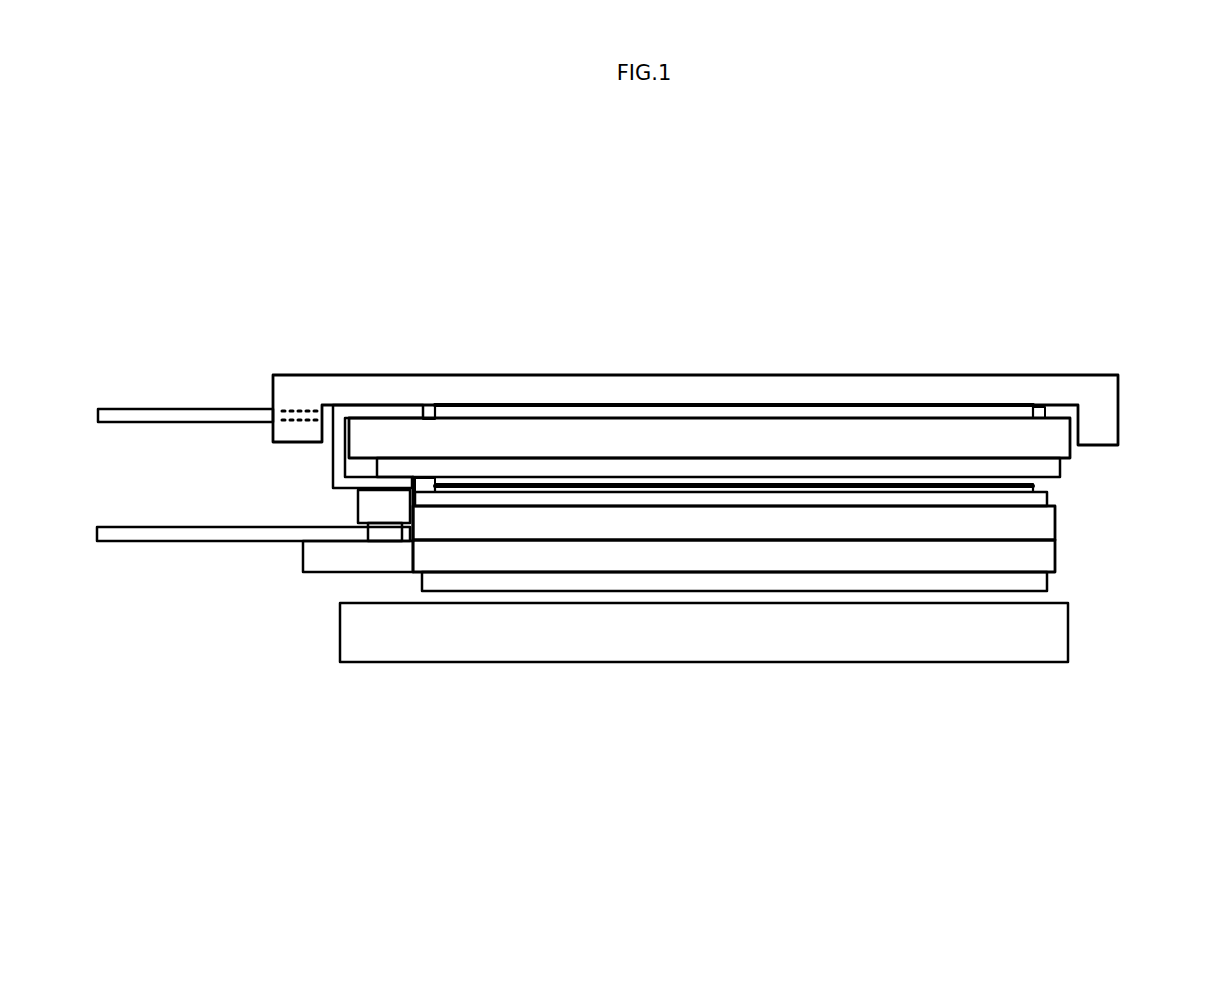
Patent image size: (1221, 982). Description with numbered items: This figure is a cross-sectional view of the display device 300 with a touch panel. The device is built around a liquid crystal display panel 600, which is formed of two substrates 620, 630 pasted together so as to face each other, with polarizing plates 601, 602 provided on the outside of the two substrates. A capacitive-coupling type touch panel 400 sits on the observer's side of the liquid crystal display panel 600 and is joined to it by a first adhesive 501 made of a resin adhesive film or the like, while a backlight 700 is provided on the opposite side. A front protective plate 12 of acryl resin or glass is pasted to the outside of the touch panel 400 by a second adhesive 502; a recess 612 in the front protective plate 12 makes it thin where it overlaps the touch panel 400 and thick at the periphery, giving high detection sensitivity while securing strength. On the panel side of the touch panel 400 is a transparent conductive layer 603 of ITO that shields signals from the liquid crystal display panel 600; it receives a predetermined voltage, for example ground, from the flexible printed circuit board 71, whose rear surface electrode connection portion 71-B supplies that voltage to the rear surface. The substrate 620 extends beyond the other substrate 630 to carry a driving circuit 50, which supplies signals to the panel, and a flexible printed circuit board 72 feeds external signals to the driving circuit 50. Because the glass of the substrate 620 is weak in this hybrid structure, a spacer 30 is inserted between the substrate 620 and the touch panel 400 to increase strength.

The front protective plate 12 is at (640, 373).
The flexible printed circuit board 71 is at (155, 408).
The rear surface electrode connection portion 71-B is at (335, 460).
The flexible printed circuit board 72 is at (212, 536).
The spacer 30 is at (364, 502).
The driving circuit 50 is at (388, 533).
The display device 300 is at (681, 677).
The touch panel 400 is at (1082, 441).
The first adhesive 501 is at (1023, 484).
The second adhesive 502 is at (1023, 415).
The liquid crystal display panel 600 is at (792, 611).
The polarizing plate 601 is at (1038, 499).
The polarizing plate 602 is at (1048, 583).
The transparent conductive layer 603 is at (1050, 466).
The recess 612 is at (1050, 403).
The substrate 620 is at (913, 552).
The substrate 630 is at (847, 527).
The backlight 700 is at (1057, 633).